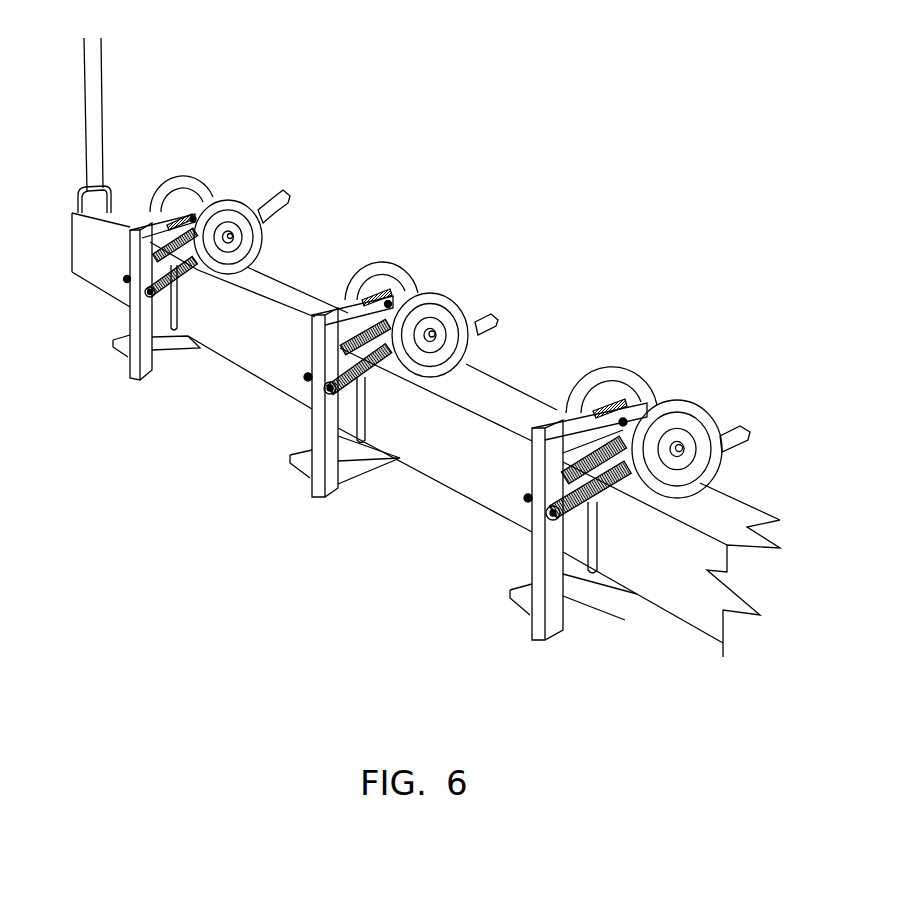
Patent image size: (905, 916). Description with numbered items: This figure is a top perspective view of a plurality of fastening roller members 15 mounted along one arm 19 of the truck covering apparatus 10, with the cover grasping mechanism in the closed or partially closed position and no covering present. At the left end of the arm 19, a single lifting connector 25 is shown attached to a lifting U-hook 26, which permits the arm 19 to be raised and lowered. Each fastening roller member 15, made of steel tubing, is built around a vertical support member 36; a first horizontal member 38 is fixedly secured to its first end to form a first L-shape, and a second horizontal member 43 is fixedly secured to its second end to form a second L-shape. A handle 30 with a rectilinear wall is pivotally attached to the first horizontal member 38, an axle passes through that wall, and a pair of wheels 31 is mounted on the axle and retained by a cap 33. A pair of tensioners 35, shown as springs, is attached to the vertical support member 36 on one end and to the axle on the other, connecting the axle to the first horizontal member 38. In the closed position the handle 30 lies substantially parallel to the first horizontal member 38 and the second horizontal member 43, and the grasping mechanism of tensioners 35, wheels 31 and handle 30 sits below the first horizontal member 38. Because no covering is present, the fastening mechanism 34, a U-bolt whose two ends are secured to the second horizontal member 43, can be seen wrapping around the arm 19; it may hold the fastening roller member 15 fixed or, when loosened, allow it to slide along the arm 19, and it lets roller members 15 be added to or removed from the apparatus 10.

The truck covering apparatus 10 is at (413, 380).
The fastening roller member 15 is at (620, 522).
The arm 19 is at (687, 607).
The lifting connector 25 is at (84, 121).
The lifting U-hook 26 is at (112, 193).
The handle 30 is at (268, 186).
The wheels 31 is at (607, 366).
The cap 33 is at (683, 460).
The fastening mechanism 34 is at (595, 522).
The tensioners 35 is at (553, 522).
The vertical support member 36 is at (533, 487).
The first horizontal member 38 is at (655, 400).
The second horizontal member 43 is at (576, 630).